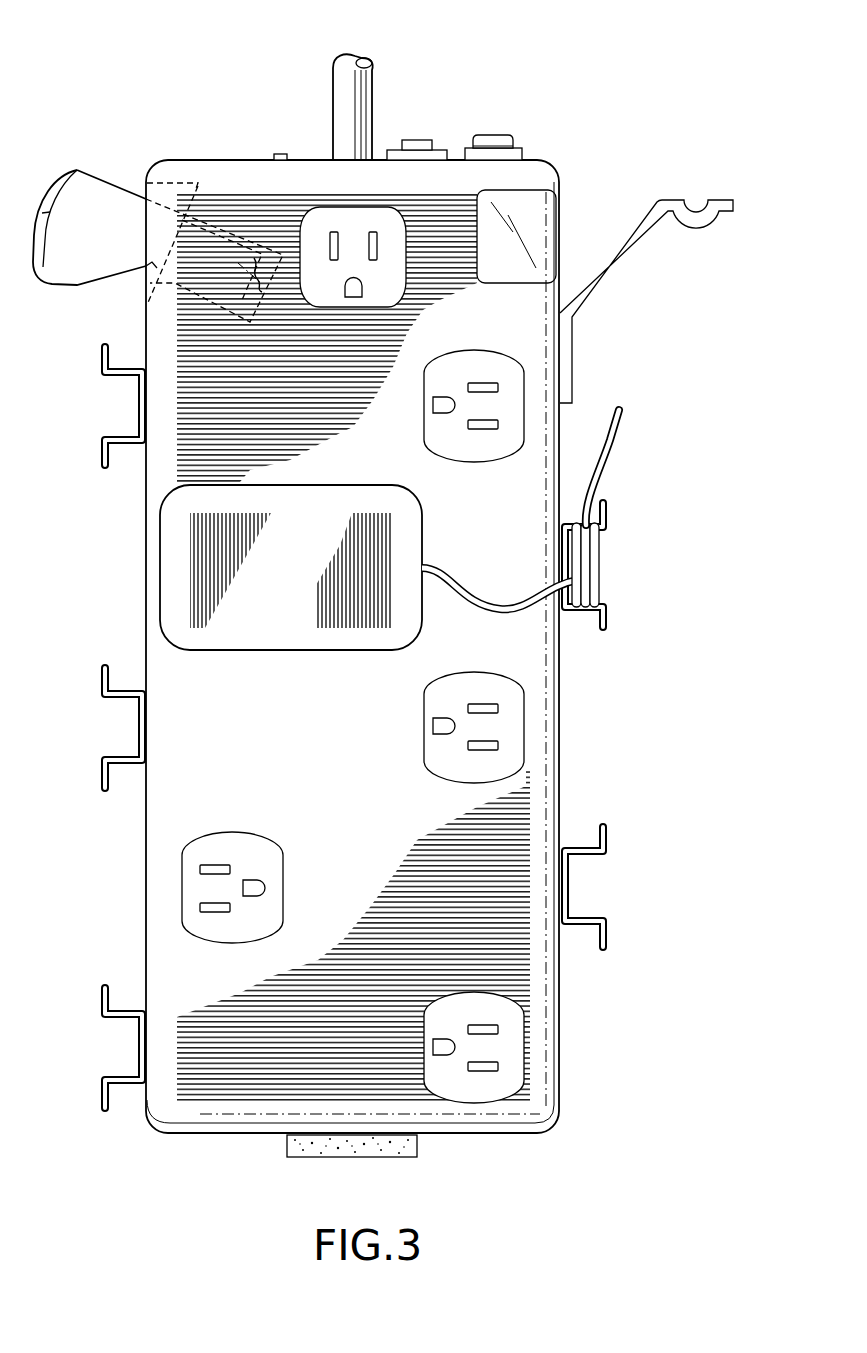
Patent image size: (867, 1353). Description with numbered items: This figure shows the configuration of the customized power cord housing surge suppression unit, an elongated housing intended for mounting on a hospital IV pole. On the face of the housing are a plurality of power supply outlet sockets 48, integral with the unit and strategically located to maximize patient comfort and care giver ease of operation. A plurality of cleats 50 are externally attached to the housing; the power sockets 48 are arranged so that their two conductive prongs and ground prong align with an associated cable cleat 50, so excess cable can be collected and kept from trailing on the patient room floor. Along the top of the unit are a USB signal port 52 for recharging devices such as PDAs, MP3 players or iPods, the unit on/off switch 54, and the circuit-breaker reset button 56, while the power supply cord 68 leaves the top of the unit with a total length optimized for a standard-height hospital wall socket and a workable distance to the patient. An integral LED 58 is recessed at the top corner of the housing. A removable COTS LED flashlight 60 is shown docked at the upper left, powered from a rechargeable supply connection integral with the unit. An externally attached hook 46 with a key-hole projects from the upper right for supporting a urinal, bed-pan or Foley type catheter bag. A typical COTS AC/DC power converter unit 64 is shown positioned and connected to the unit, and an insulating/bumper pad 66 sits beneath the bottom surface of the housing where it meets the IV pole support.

The hook 46 is at (618, 265).
The power supply outlet sockets 48 is at (523, 727).
The cleats 50 is at (605, 832).
The USB signal port 52 is at (281, 153).
The on/off switch 54 is at (493, 133).
The circuit-breaker reset button 56 is at (417, 140).
The LED 58 is at (555, 206).
The LED flashlight 60 is at (105, 181).
The AC/DC power converter unit 64 is at (160, 577).
The insulating/bumper pad 66 is at (280, 1157).
The power supply cord 68 is at (331, 105).